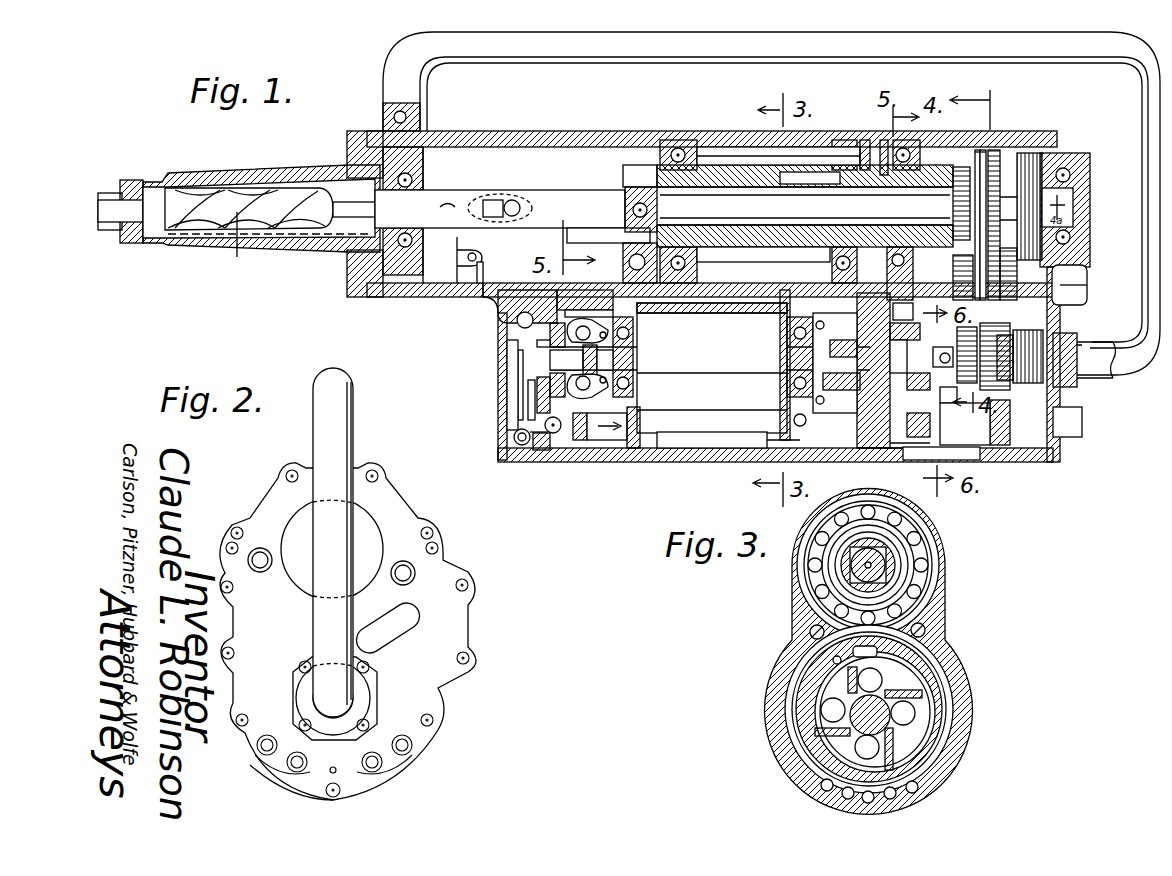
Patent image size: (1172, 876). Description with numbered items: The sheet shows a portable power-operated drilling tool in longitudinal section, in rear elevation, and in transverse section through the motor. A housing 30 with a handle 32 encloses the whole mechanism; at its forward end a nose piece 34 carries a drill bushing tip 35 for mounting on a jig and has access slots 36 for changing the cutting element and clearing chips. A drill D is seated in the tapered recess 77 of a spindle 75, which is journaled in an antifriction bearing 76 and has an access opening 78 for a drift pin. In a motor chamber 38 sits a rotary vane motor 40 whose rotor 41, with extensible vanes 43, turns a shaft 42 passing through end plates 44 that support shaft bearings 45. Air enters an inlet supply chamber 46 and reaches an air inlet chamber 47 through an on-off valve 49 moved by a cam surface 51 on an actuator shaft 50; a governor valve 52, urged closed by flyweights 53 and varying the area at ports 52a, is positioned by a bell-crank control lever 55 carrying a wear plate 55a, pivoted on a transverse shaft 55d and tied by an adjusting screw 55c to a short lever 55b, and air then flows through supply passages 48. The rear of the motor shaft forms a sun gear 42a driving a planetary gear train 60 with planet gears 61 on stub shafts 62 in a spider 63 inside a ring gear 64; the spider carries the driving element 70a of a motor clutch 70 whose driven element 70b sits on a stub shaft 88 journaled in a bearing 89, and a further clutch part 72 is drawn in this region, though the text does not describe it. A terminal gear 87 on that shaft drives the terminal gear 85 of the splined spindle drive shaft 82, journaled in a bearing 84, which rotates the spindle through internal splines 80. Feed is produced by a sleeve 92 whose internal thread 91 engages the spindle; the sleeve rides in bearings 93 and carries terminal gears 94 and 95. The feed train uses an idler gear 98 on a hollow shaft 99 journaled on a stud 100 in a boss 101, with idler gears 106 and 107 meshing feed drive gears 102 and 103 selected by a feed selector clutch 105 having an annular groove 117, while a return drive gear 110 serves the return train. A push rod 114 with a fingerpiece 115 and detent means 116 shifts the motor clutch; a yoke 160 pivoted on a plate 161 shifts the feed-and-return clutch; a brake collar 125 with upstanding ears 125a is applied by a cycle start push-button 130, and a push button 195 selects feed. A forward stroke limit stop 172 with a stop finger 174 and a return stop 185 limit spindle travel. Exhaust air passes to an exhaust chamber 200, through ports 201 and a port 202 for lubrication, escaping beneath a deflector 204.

In FIG. 1, the housing 30 is at (505, 133).
In FIG. 2, the housing 30 is at (265, 520).
In FIG. 3, the housing 30 is at (797, 542).
In FIG. 1, the handle 32 is at (432, 64).
In FIG. 2, the handle 32 is at (312, 435).
In FIG. 1, the nose piece 34 is at (193, 175).
In FIG. 1, the drill bushing tip 35 is at (105, 195).
In FIG. 1, the access slots 36 is at (277, 192).
In FIG. 1, the drill D is at (252, 283).
In FIG. 1, the motor chamber 38 is at (680, 285).
In FIG. 3, the motor chamber 38 is at (960, 662).
In FIG. 1, the pressure fluid operated motor 40 is at (645, 442).
In FIG. 3, the pressure fluid operated motor 40 is at (950, 704).
In FIG. 3, the rotor 41 is at (900, 743).
In FIG. 1, the shaft 42 is at (625, 360).
In FIG. 3, the shaft 42 is at (890, 715).
In FIG. 1, the sun gear 42a is at (841, 381).
In FIG. 1, the extensible vanes 43 is at (685, 360).
In FIG. 3, the extensible vanes 43 is at (813, 747).
In FIG. 1, the motor end plates 44 is at (640, 316).
In FIG. 1, the shaft bearings 45 is at (635, 385).
In FIG. 1, the inlet supply chamber 46 is at (585, 442).
In FIG. 1, the air inlet chamber 47 is at (507, 418).
In FIG. 1, the supply passages 48 is at (548, 305).
In FIG. 3, the supply passages 48 is at (870, 640).
In FIG. 1, the on-off air supply valve 49 is at (608, 442).
In FIG. 1, the transverse actuator shaft 50 is at (510, 430).
In FIG. 1, the cam surface 51 is at (553, 435).
In FIG. 1, the governor valve 52 is at (575, 366).
In FIG. 1, the ports 52a is at (537, 344).
In FIG. 1, the flyweights 53 is at (587, 360).
In FIG. 1, the control lever 55 is at (518, 400).
In FIG. 1, the wear plate 55a is at (515, 372).
In FIG. 1, the short lever 55b is at (512, 444).
In FIG. 1, the adjusting screw 55c is at (530, 448).
In FIG. 1, the transverse shaft 55d is at (520, 447).
In FIG. 1, the planetary speed reducing gear train 60 is at (890, 448).
In FIG. 1, the planet gears 61 is at (835, 258).
In FIG. 1, the stub shafts 62 is at (850, 357).
In FIG. 1, the rotatable spider 63 is at (900, 424).
In FIG. 1, the stationary external ring gear 64 is at (835, 458).
In FIG. 1, the motor clutch 70 is at (905, 322).
In FIG. 1, the driving element 70a is at (915, 390).
In FIG. 1, the driven clutch element 70b is at (900, 405).
In FIG. 1, the clutch spring 72 is at (935, 393).
In FIG. 1, the spindle 75 is at (580, 195).
In FIG. 3, the spindle 75 is at (793, 600).
In FIG. 1, the antifriction bearing 76 is at (418, 180).
In FIG. 1, the tapered recess 77 is at (445, 205).
In FIG. 1, the access opening 78 is at (510, 200).
In FIG. 1, the internal splines 80 is at (862, 197).
In FIG. 3, the internal splines 80 is at (923, 535).
In FIG. 1, the spindle drive shaft 82 is at (645, 205).
In FIG. 3, the spindle drive shaft 82 is at (887, 568).
In FIG. 1, the bearing 84 is at (1070, 175).
In FIG. 1, the terminal gear 85 is at (783, 180).
In FIG. 1, the terminal gear 87 is at (1070, 340).
In FIG. 1, the stub shaft 88 is at (1085, 378).
In FIG. 1, the bearing 89 is at (1082, 345).
In FIG. 1, the internal thread 91 is at (775, 262).
In FIG. 1, the sleeve 92 is at (707, 164).
In FIG. 3, the sleeve 92 is at (810, 558).
In FIG. 1, the bearings 93 is at (678, 150).
In FIG. 3, the bearings 93 is at (927, 552).
In FIG. 1, the terminal gear 94 is at (1025, 155).
In FIG. 1, the terminal gear 95 is at (958, 168).
In FIG. 1, the idler gear 98 is at (976, 265).
In FIG. 1, the hollow shaft 99 is at (983, 278).
In FIG. 1, the stud 100 is at (1080, 270).
In FIG. 1, the boss 101 is at (1085, 295).
In FIG. 2, the boss 101 is at (393, 633).
In FIG. 1, the spur gear 102 is at (1000, 380).
In FIG. 1, the spur gear 103 is at (963, 378).
In FIG. 1, the feed selector clutch 105 is at (1000, 440).
In FIG. 1, the idler gear 106 is at (1003, 285).
In FIG. 1, the idler gear 107 is at (965, 292).
In FIG. 1, the return drive gear 110 is at (995, 420).
In FIG. 1, the push rod 114 is at (1030, 385).
In FIG. 1, the fingerpiece 115 is at (1082, 420).
In FIG. 2, the fingerpiece 115 is at (397, 768).
In FIG. 1, the detent means 116 is at (945, 445).
In FIG. 1, the annular groove 117 is at (1028, 340).
In FIG. 1, the collar 125 is at (885, 150).
In FIG. 1, the upstanding ears 125a is at (910, 150).
In FIG. 2, the push-button 130 is at (255, 548).
In FIG. 1, the yoke 160 is at (982, 160).
In FIG. 1, the plate 161 is at (1030, 150).
In FIG. 1, the forward stroke limit stop 172 is at (479, 270).
In FIG. 1, the stop finger 174 is at (455, 265).
In FIG. 1, the return stop 185 is at (628, 245).
In FIG. 2, the push button 195 is at (420, 573).
In FIG. 1, the exhaust chamber 200 is at (720, 450).
In FIG. 1, the ports 201 is at (778, 448).
In FIG. 3, the ports 201 is at (913, 800).
In FIG. 1, the port 202 is at (895, 266).
In FIG. 1, the deflector 204 is at (933, 452).